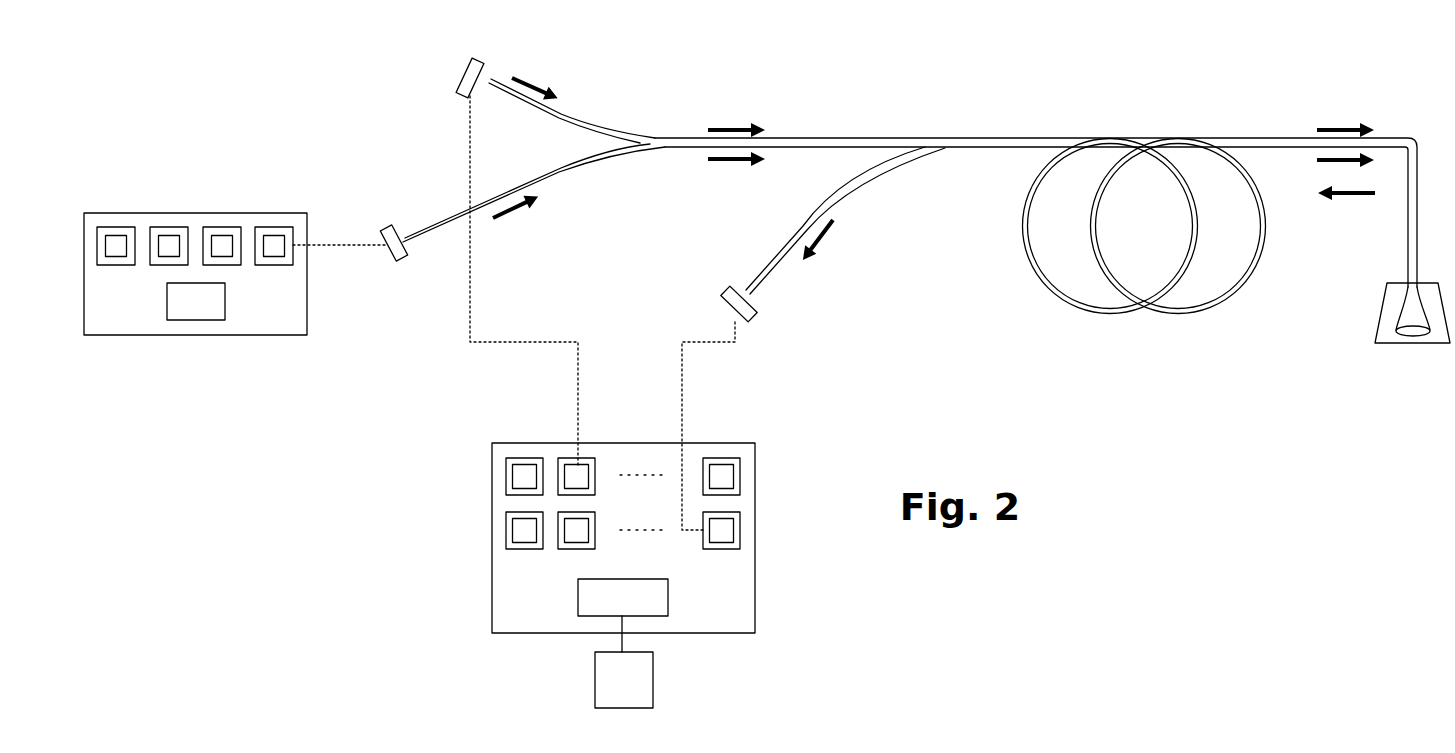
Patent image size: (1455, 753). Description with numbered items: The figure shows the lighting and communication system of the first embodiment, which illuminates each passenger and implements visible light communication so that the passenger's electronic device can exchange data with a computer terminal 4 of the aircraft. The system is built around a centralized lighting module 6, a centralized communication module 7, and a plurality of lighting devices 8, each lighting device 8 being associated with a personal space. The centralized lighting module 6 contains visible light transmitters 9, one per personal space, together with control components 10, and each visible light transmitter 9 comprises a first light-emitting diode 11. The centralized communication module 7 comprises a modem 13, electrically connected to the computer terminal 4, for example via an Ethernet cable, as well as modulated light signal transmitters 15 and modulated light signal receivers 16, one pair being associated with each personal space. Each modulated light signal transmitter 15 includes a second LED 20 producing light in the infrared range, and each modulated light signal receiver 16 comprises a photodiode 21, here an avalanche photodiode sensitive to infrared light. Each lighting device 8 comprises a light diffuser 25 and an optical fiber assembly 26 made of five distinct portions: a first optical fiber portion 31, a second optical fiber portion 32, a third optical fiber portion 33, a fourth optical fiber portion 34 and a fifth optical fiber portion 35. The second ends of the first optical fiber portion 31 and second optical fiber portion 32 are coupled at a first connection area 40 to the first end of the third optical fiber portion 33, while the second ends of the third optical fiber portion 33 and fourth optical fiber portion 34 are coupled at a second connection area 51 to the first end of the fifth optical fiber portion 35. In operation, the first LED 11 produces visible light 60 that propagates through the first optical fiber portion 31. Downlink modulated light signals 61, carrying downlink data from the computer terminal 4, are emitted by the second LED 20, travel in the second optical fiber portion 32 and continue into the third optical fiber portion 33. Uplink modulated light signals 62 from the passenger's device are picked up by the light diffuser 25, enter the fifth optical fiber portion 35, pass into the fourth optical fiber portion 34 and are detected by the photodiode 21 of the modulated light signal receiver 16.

The computer terminal 4 is at (624, 680).
The centralized lighting module 6 is at (262, 336).
The centralized communication module 7 is at (755, 600).
The lighting device 8 is at (932, 243).
The visible light transmitter 9 is at (110, 227).
The control components 10 is at (196, 301).
The first light-emitting diode 11 is at (165, 258).
The modem 13 is at (623, 615).
The modulated light signal transmitter 15 is at (519, 458).
The modulated light signal receiver 16 is at (506, 530).
The second LED 20 is at (478, 62).
The photodiode 21 is at (752, 313).
The light diffuser 25 is at (1385, 315).
The optical fiber assembly 26 is at (966, 170).
The first optical fiber portion 31 is at (580, 165).
The second optical fiber portion 32 is at (600, 122).
The third optical fiber portion 33 is at (830, 138).
The fourth optical fiber portion 34 is at (772, 265).
The fifth optical fiber portion 35 is at (1033, 139).
The first connection area 40 is at (667, 162).
The second connection area 51 is at (938, 118).
The visible light 60 is at (512, 208).
The downlink modulated light signals 61 is at (530, 88).
The uplink modulated light signals 62 is at (826, 238).